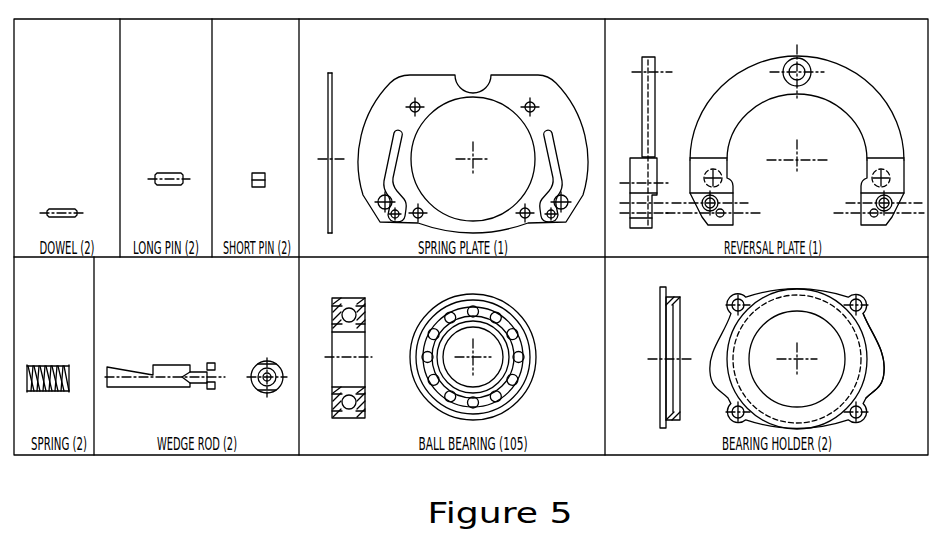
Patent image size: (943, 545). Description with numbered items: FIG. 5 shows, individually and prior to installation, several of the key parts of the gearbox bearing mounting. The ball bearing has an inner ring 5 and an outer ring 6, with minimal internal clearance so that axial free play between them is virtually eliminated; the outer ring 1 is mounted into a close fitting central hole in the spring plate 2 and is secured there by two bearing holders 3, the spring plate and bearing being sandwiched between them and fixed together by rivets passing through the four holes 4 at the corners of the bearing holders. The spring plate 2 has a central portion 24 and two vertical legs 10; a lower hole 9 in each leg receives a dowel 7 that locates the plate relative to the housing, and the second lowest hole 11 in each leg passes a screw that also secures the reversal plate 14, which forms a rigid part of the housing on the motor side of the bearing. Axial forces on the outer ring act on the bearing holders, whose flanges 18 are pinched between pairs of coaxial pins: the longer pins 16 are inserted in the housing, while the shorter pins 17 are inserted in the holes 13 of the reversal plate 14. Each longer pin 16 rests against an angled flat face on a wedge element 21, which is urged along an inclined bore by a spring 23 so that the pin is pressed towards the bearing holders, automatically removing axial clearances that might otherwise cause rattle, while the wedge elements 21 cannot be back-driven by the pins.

The outer ring 1 is at (459, 340).
The spring plate 2 is at (454, 137).
The bearing holder 3 is at (782, 354).
The hole 4 is at (866, 414).
The inner ring 5 is at (471, 337).
The outer ring 6 is at (537, 340).
The dowel 7 is at (62, 206).
The lower hole 9 is at (391, 224).
The vertical leg 10 is at (373, 156).
The second lowest hole 11 is at (381, 204).
The hole 13 is at (729, 170).
The reversal plate 14 is at (772, 124).
The longer pin 16 is at (168, 171).
The shorter pin 17 is at (259, 171).
The flange 18 is at (887, 362).
The wedge element 21 is at (179, 365).
The spring 23 is at (47, 358).
The central portion 24 is at (437, 208).